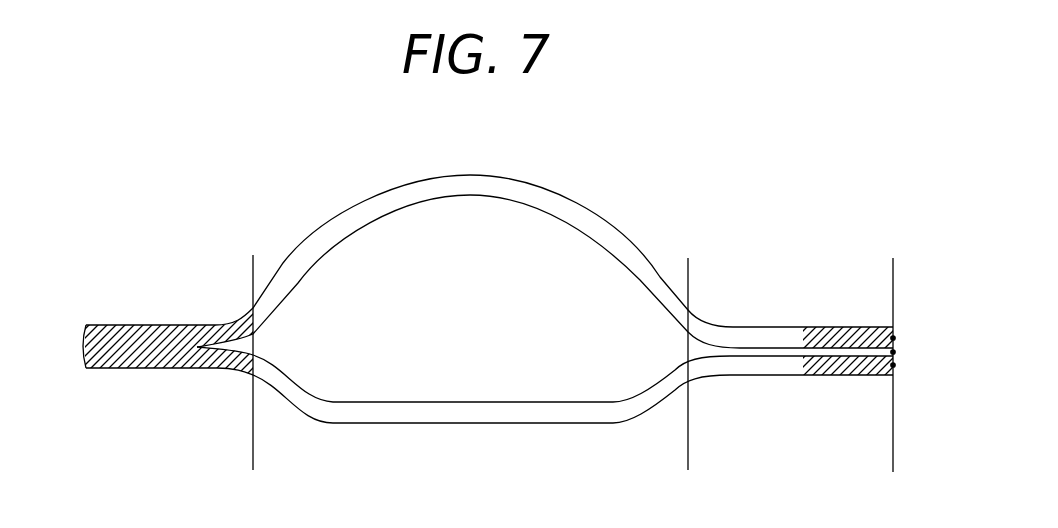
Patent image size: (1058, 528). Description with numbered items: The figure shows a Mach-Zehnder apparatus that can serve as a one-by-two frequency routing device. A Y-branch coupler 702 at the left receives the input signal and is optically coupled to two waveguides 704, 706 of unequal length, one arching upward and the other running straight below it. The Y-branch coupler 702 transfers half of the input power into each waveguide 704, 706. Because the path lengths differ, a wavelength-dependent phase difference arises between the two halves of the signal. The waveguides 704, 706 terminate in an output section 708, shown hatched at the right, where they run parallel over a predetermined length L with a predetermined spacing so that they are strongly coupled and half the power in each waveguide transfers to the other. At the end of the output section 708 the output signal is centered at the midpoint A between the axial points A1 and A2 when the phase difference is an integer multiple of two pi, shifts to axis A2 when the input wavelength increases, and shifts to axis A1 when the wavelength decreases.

The Y-branch coupler 702 is at (137, 371).
The waveguide 704 is at (470, 175).
The waveguide 706 is at (470, 400).
The output section 708 is at (785, 324).
The axial point A1 is at (893, 338).
The midpoint A is at (893, 352).
The axial point A2 is at (893, 365).
The length of output section L is at (893, 452).